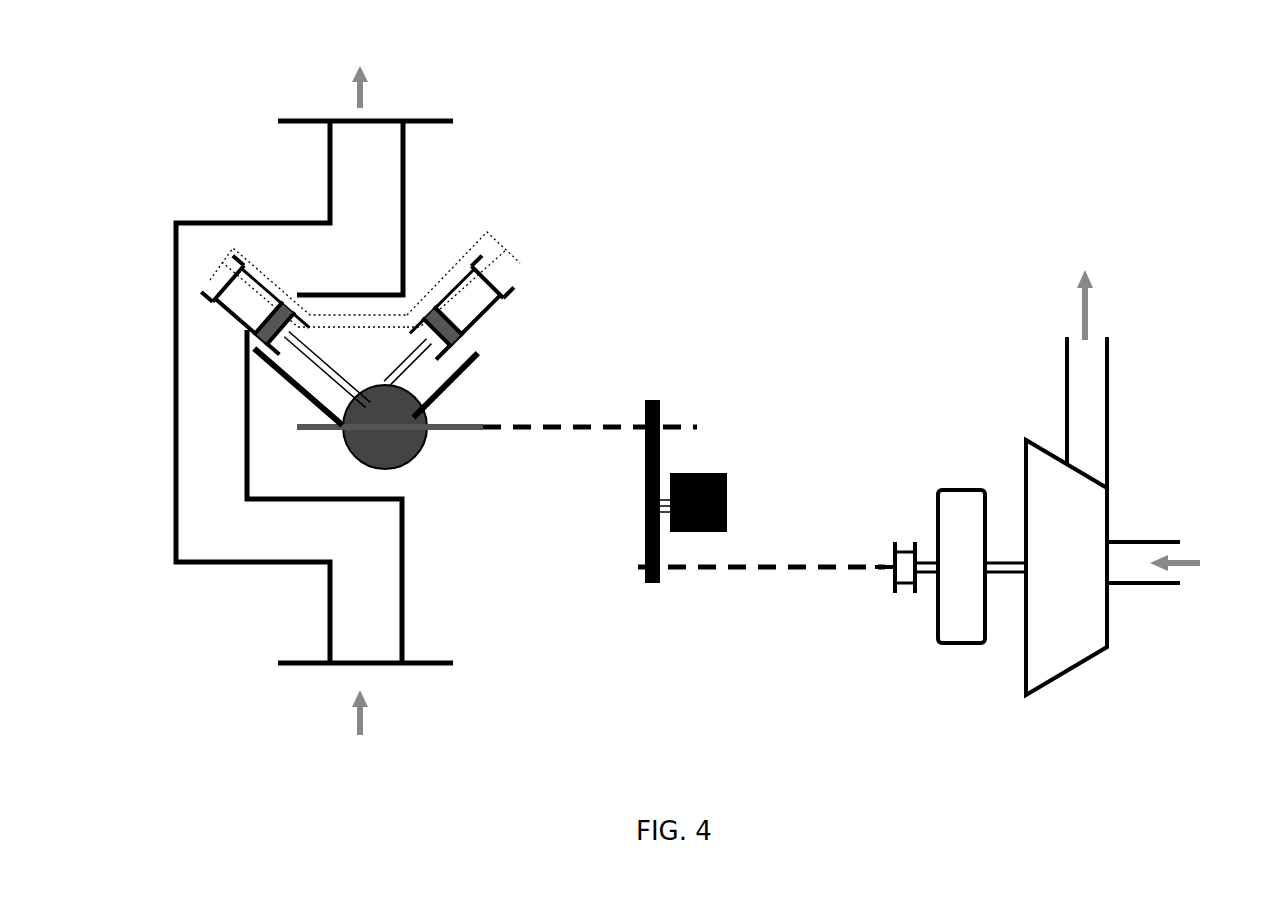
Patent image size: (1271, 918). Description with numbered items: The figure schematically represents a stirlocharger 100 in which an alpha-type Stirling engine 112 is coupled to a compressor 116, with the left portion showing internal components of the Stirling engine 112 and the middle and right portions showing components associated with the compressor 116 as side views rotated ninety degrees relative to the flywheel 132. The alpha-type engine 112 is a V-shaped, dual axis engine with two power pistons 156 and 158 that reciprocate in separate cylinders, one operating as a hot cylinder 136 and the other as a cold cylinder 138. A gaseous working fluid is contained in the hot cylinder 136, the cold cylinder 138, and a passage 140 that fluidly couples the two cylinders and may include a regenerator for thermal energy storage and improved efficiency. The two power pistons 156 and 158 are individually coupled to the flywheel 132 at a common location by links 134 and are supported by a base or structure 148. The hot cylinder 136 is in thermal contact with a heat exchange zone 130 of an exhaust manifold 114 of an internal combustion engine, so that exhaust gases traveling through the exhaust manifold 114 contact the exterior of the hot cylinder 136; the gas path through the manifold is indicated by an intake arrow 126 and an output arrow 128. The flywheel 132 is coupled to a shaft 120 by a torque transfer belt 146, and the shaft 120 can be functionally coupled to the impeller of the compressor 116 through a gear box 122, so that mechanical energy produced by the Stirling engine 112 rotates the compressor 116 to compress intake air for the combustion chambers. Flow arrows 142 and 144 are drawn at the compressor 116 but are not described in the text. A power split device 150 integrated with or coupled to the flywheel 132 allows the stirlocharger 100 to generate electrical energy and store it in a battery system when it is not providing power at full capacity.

The stirlocharger 100 is at (934, 132).
The alpha-type Stirling engine 112 is at (565, 250).
The exhaust manifold 114 is at (223, 545).
The compressor 116 is at (1092, 680).
The shaft 120 is at (928, 560).
The gear box 122 is at (962, 503).
The intake arrow 126 is at (361, 727).
The output arrow 128 is at (361, 74).
The heat exchange zone 130 is at (178, 286).
The flywheel 132 is at (416, 458).
The links 134 is at (397, 385).
The hot cylinder 136 is at (222, 305).
The cold cylinder 138 is at (506, 299).
The passage 140 is at (463, 250).
The turbine inlet flow 142 is at (1176, 562).
The turbine outlet flow 144 is at (1087, 367).
The torque transfer belt 146 is at (650, 548).
The base or structure 148 is at (312, 432).
The power split device 150 is at (714, 486).
The power piston 156 is at (247, 330).
The power piston 158 is at (470, 340).